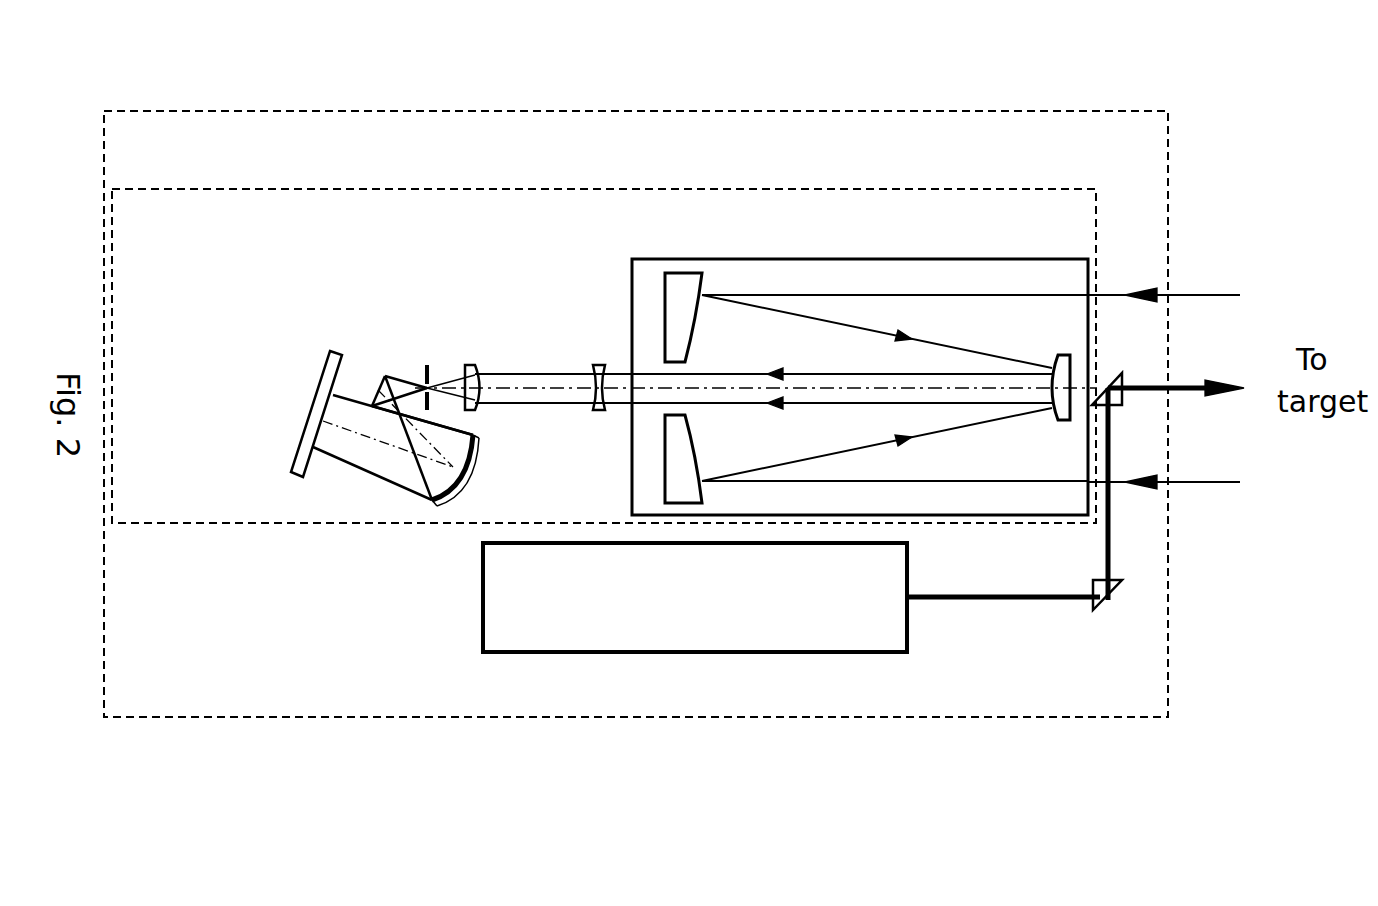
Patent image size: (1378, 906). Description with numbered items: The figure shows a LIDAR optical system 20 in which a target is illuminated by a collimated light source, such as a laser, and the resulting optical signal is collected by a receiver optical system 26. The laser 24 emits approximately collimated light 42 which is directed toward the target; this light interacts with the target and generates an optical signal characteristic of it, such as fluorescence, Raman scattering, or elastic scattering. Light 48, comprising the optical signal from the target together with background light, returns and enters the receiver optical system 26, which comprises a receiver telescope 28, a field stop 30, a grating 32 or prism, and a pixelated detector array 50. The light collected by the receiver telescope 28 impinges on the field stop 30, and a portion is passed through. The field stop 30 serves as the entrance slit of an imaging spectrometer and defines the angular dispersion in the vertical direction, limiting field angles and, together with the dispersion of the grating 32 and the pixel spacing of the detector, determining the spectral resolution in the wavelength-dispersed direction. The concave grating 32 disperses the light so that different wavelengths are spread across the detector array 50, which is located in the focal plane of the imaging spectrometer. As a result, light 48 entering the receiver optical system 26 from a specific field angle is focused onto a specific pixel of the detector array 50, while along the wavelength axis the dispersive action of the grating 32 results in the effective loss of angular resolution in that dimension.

The LIDAR system 20 is at (636, 414).
The receiver optical system 26 is at (604, 356).
The receiver telescope 28 is at (756, 387).
The laser 24 is at (695, 597).
The field stop 30 is at (422, 375).
The grating 32 is at (427, 512).
The pixelated detector array 50 is at (317, 410).
The light from collimated light source 42 is at (1211, 393).
The light entering the receiver optical system 48 is at (1201, 298).